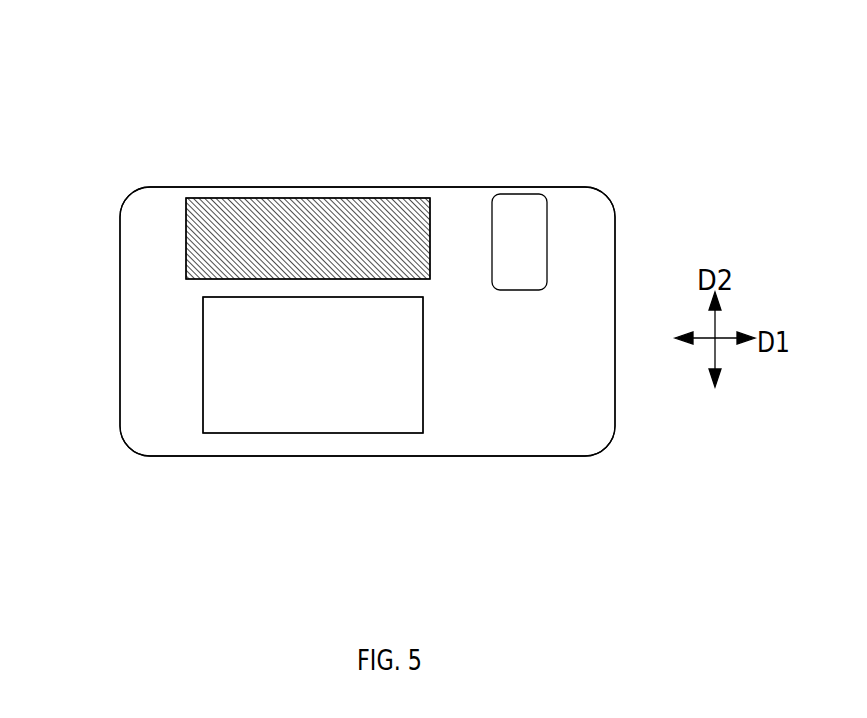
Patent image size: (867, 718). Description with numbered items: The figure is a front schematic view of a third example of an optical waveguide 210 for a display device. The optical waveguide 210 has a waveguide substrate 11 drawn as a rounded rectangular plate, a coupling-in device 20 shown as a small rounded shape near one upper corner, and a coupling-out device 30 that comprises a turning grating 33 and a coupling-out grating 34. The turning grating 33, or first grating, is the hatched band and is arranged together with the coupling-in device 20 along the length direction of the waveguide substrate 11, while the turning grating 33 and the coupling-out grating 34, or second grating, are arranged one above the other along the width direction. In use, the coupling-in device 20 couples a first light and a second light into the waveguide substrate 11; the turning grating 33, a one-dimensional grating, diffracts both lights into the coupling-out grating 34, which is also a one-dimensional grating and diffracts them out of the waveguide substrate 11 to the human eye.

The optical waveguide 210 is at (88, 109).
The waveguide substrate 11 is at (597, 272).
The coupling-in device 20 is at (516, 218).
The coupling-out device 30 is at (403, 83).
The turning grating 33 is at (267, 237).
The coupling-out grating 34 is at (295, 349).